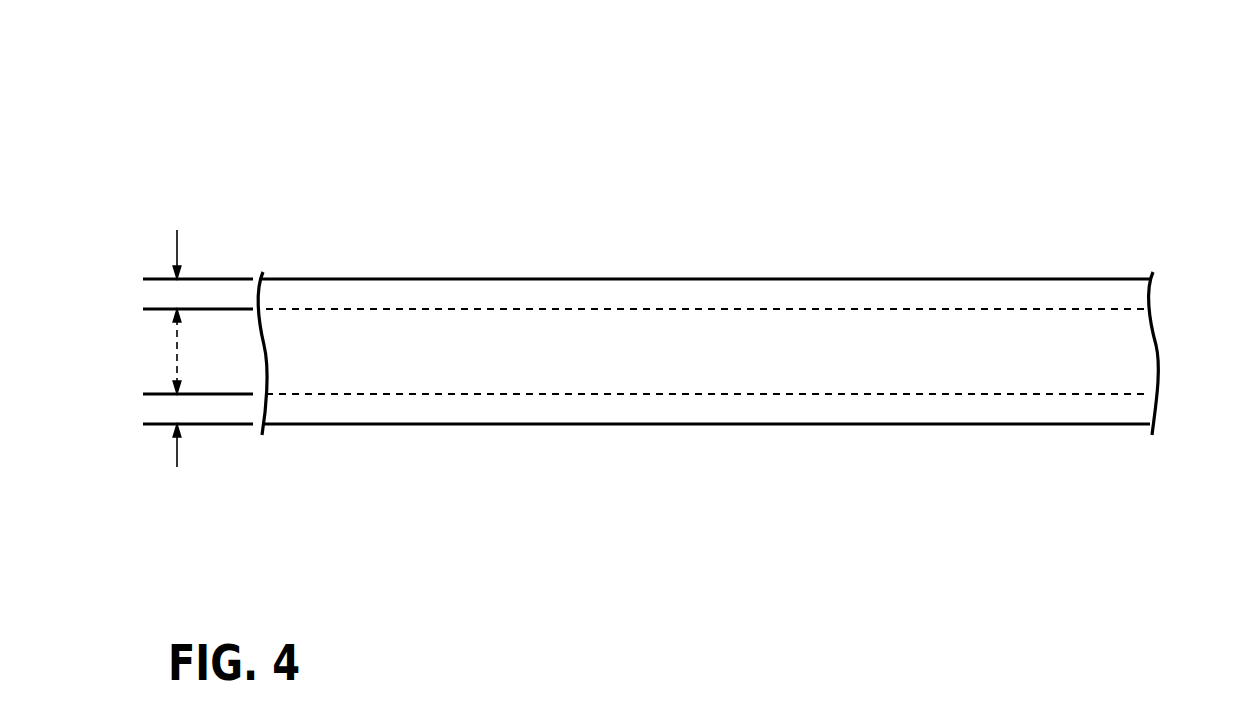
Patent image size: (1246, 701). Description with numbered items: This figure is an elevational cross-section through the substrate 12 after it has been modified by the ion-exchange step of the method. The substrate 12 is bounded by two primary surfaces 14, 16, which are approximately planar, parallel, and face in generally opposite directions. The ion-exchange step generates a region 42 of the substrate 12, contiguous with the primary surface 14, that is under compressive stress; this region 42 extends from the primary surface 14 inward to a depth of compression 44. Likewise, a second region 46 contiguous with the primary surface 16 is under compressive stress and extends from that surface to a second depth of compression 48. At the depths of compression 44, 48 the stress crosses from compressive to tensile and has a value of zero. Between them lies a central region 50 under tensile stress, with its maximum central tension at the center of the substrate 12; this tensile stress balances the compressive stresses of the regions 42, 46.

The substrate 12 is at (365, 137).
The primary surface 14 is at (708, 277).
The primary surface 16 is at (718, 425).
The region 42 is at (343, 292).
The depth of compression 44 is at (170, 240).
The second region 46 is at (353, 408).
The second depth of compression 48 is at (172, 450).
The central region 50 is at (1102, 355).